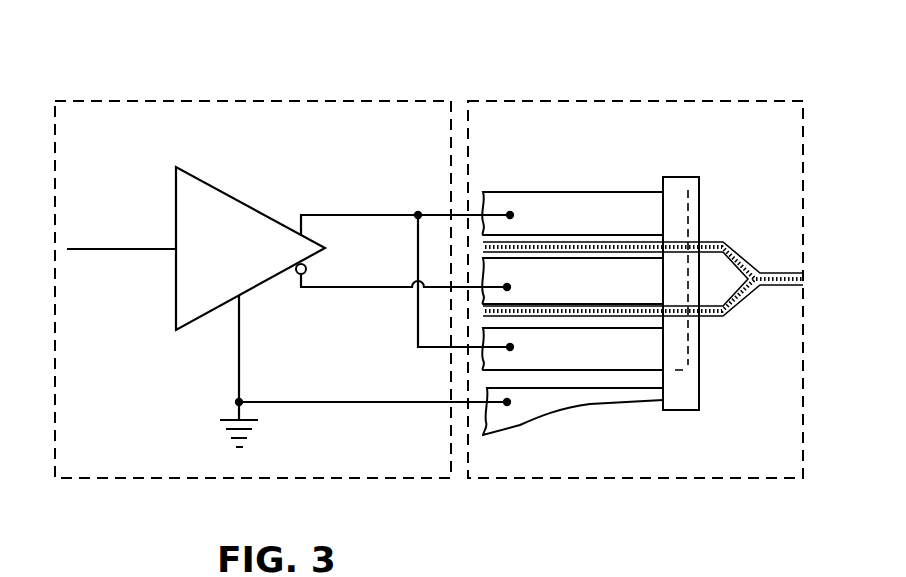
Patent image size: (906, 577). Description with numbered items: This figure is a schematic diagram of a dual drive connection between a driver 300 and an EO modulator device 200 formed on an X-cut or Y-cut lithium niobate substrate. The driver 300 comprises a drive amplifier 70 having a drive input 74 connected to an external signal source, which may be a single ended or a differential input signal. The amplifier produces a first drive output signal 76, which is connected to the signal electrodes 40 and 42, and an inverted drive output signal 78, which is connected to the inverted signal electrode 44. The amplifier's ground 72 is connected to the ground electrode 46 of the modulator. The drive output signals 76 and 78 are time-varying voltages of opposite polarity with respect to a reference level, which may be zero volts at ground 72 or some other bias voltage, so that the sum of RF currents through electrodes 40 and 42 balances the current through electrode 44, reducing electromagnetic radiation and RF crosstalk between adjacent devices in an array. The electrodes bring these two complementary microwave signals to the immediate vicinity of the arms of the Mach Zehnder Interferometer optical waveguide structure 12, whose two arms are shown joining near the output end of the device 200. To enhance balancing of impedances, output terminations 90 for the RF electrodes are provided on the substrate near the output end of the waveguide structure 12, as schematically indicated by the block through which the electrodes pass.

The driver 300 is at (330, 118).
The EO modulator device 200 is at (727, 118).
The drive amplifier 70 is at (232, 210).
The drive input 74 is at (91, 255).
The first drive output signal 76 is at (334, 222).
The inverted drive output signal 78 is at (330, 282).
The ground 72 is at (241, 381).
The signal electrode 40 is at (533, 198).
The inverted signal electrode 44 is at (580, 266).
The signal electrode 42 is at (592, 358).
The ground electrode 46 is at (503, 418).
The Mach Zehnder Interferometer optical waveguide structure 12 is at (733, 306).
The output terminations 90 is at (699, 183).